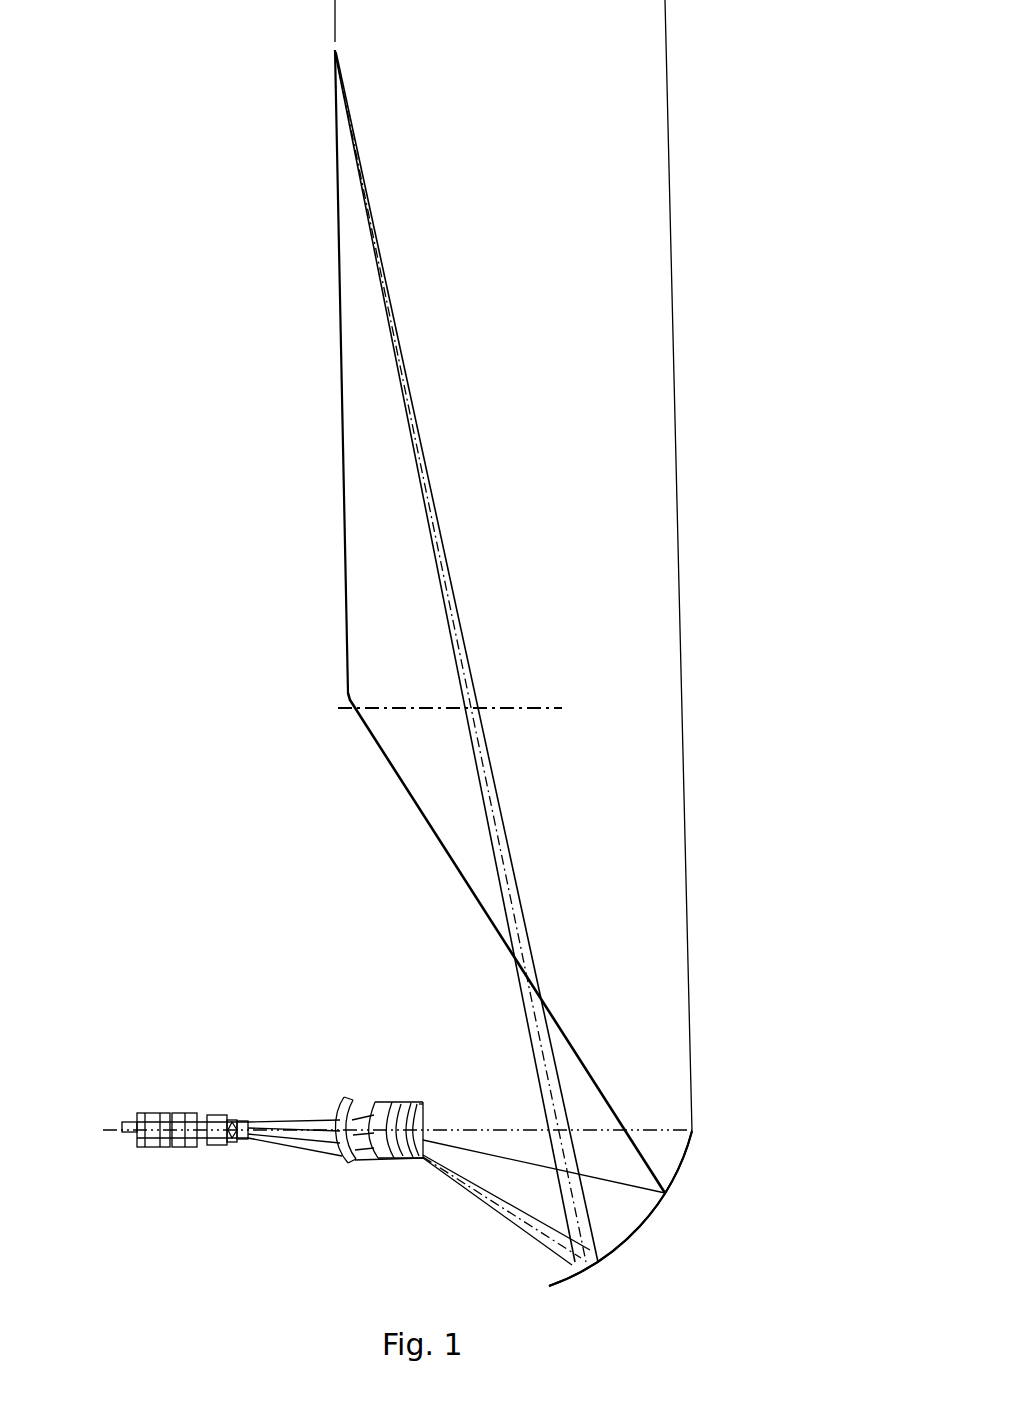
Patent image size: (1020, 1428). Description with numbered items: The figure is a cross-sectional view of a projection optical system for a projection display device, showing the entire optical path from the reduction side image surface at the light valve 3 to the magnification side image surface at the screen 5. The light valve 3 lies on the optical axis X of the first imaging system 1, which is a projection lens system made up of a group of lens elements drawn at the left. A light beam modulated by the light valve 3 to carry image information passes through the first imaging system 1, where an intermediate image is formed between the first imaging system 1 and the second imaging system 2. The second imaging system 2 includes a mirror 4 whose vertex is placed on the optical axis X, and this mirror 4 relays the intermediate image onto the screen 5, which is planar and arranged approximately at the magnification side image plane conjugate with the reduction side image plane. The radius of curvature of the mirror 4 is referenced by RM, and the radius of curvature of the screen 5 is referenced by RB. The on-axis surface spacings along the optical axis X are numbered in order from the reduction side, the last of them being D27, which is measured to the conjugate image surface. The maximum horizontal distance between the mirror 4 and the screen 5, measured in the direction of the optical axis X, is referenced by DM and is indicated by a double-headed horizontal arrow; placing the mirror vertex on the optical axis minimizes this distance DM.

The first imaging system 1 is at (283, 1099).
The second imaging system 2 is at (724, 1158).
The light valve 3 is at (122, 1124).
The mirror 4 is at (642, 1224).
The screen 5 is at (345, 523).
The optical axis X is at (113, 1132).
The maximum horizontal distance between the mirror and the screen DM is at (338, 15).
The radius of curvature of the screen RB is at (347, 652).
The radius of curvature of the mirror RM is at (680, 1159).
The on-axis surface spacing D27 is at (493, 1128).